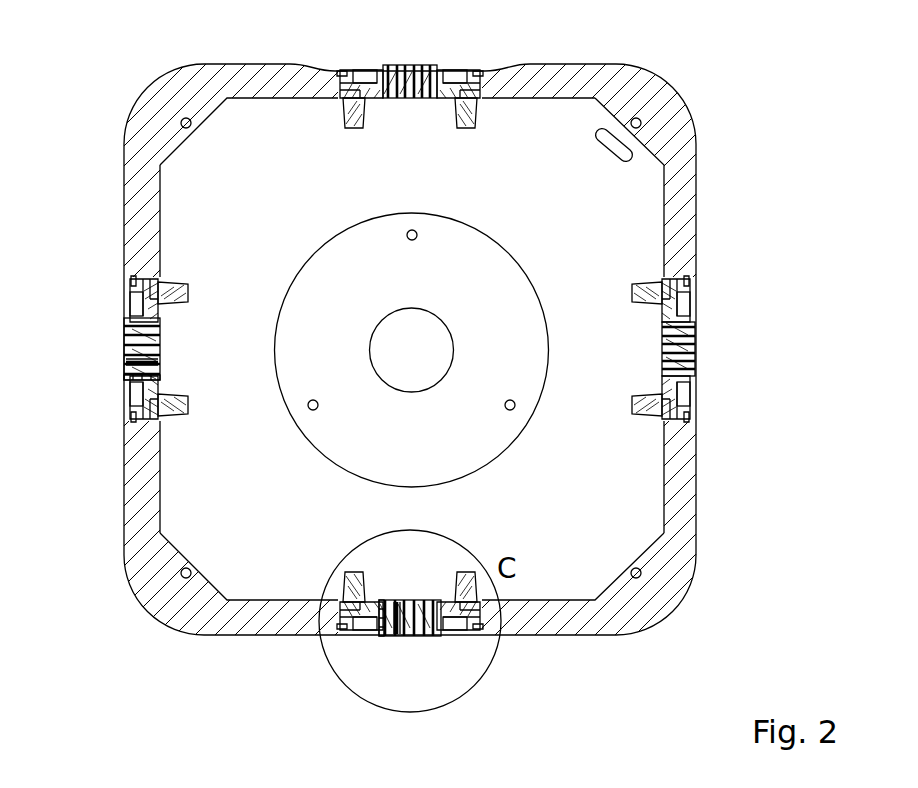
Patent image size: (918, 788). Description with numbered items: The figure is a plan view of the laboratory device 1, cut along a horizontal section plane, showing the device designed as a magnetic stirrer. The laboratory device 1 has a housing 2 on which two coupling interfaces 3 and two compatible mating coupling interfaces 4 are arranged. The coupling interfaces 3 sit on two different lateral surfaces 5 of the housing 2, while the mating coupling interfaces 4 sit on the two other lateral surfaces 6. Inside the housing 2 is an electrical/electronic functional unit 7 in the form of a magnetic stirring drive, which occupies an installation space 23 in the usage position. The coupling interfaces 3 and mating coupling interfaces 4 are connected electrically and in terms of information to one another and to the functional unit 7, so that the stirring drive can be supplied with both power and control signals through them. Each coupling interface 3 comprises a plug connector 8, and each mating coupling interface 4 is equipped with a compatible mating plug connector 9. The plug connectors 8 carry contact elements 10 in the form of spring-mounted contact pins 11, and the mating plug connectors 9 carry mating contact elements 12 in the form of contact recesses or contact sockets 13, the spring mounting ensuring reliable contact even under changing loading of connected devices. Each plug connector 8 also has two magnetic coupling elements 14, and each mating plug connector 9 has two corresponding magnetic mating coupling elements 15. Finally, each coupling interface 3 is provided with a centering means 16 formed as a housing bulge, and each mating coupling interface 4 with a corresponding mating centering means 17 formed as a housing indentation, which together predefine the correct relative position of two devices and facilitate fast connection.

The laboratory device 1 is at (165, 60).
The housing 2 is at (578, 72).
The coupling interface 3 is at (127, 377).
The mating coupling interface 4 is at (440, 68).
The lateral surface 5 is at (122, 150).
The lateral surface 6 is at (497, 65).
The electrical/electronic functional unit 7 is at (493, 275).
The plug connector 8 is at (127, 338).
The mating plug connector 9 is at (380, 64).
The contact element 10 is at (80, 335).
The contact pin 11 is at (125, 362).
The mating contact element 12 is at (742, 347).
The contact socket 13 is at (416, 64).
The magnetic coupling element 14 is at (128, 302).
The magnetic mating coupling element 15 is at (360, 68).
The centering means 16 is at (126, 450).
The mating centering means 17 is at (315, 68).
The installation space 23 is at (195, 222).